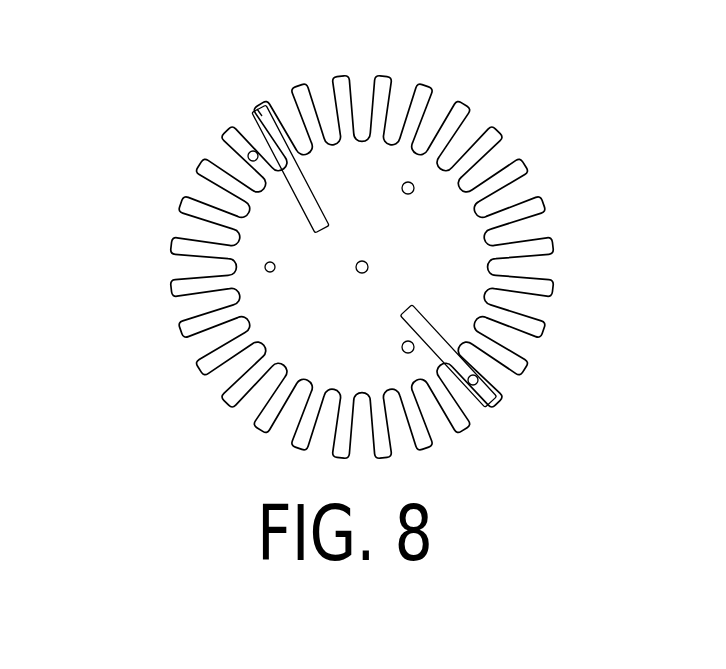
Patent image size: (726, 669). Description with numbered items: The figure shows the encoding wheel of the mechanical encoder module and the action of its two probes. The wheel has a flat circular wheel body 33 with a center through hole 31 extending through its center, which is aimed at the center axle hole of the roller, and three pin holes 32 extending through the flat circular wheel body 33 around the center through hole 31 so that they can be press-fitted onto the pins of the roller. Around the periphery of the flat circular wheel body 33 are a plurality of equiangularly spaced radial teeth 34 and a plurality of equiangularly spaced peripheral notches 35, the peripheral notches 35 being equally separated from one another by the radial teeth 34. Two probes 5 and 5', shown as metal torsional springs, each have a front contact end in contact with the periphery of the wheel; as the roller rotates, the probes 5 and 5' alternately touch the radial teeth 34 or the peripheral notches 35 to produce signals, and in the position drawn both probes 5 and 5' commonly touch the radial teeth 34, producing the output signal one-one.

The center through hole 31 is at (368, 266).
The pin holes 32 is at (265, 267).
The flat circular wheel body 33 is at (328, 168).
The radial teeth 34 is at (260, 106).
The peripheral notches 35 is at (248, 157).
The probe 5 is at (192, 169).
The probe 5' is at (501, 356).